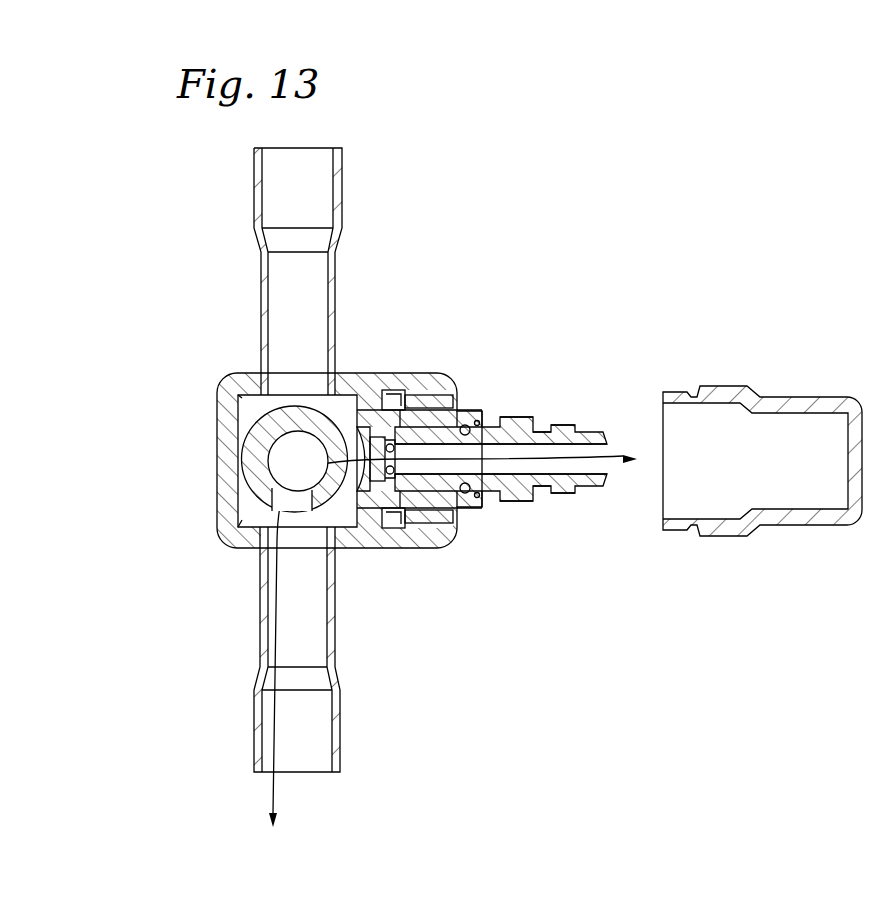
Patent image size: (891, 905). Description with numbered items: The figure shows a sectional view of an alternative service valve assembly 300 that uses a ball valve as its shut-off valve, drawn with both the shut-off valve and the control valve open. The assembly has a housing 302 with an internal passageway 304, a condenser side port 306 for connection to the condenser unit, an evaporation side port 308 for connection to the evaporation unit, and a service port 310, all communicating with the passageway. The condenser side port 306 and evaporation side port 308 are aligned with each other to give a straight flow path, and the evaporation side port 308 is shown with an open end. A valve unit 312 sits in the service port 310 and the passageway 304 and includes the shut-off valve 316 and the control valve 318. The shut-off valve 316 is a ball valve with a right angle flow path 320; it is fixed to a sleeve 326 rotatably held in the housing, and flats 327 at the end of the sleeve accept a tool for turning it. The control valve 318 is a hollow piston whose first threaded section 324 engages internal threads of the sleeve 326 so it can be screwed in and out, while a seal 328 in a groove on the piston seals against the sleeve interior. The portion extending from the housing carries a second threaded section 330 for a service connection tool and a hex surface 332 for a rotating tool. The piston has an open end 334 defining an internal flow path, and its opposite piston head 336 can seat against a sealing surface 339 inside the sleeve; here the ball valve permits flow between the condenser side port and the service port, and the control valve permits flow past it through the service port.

The service valve assembly 300 is at (445, 250).
The housing 302 is at (217, 413).
The passageway 304 is at (320, 460).
The condenser side port 306 is at (337, 628).
The evaporation side port 308 is at (258, 293).
The service port 310 is at (440, 420).
The valve unit 312 is at (510, 523).
The shut-off valve 316 is at (250, 467).
The control valve 318 is at (547, 418).
The right angle flow path 320 is at (293, 507).
The first threaded section 324 is at (413, 420).
The sleeve 326 is at (373, 415).
The flats 327 is at (470, 425).
The seal 328 is at (465, 503).
The second threaded section 330 is at (563, 492).
The hex surface 332 is at (523, 500).
The open end 334 is at (605, 453).
The piston head 336 is at (373, 503).
The sealing surface 339 is at (350, 500).